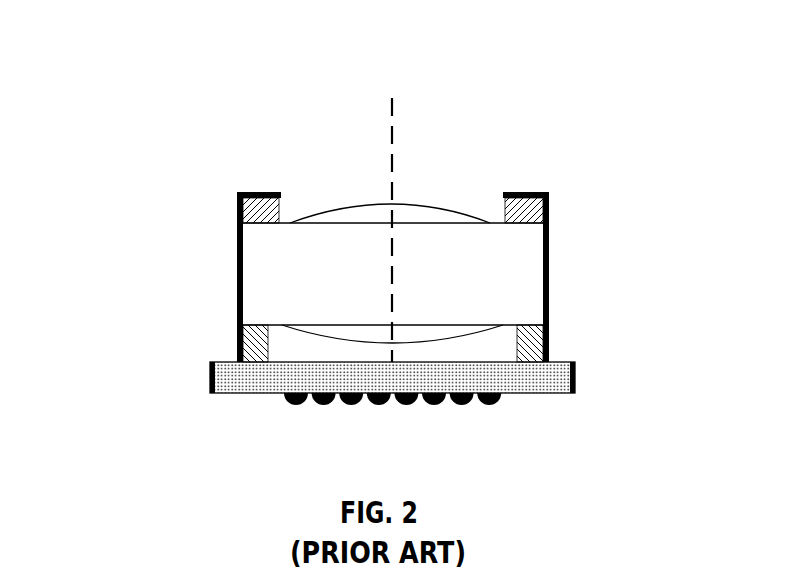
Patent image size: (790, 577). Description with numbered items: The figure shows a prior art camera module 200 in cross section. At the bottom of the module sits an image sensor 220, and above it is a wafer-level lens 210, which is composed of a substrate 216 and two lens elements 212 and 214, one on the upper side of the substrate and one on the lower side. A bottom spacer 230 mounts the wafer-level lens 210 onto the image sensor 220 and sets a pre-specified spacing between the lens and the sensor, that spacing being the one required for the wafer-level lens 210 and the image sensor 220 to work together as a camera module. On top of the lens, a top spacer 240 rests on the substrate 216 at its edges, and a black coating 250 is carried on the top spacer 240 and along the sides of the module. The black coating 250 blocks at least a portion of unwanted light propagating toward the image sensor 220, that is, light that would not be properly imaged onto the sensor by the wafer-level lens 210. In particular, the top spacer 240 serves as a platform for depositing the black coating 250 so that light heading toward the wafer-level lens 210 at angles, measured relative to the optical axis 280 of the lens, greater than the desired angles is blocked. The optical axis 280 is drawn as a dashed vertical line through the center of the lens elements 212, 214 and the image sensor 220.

The prior art camera module 200 is at (164, 72).
The wafer-level lens 210 is at (426, 139).
The lens element 212 is at (350, 200).
The lens element 214 is at (552, 326).
The substrate 216 is at (498, 222).
The image sensor 220 is at (245, 393).
The bottom spacer 230 is at (268, 345).
The top spacer 240 is at (300, 196).
The black coating 250 is at (237, 242).
The optical axis 280 is at (391, 110).